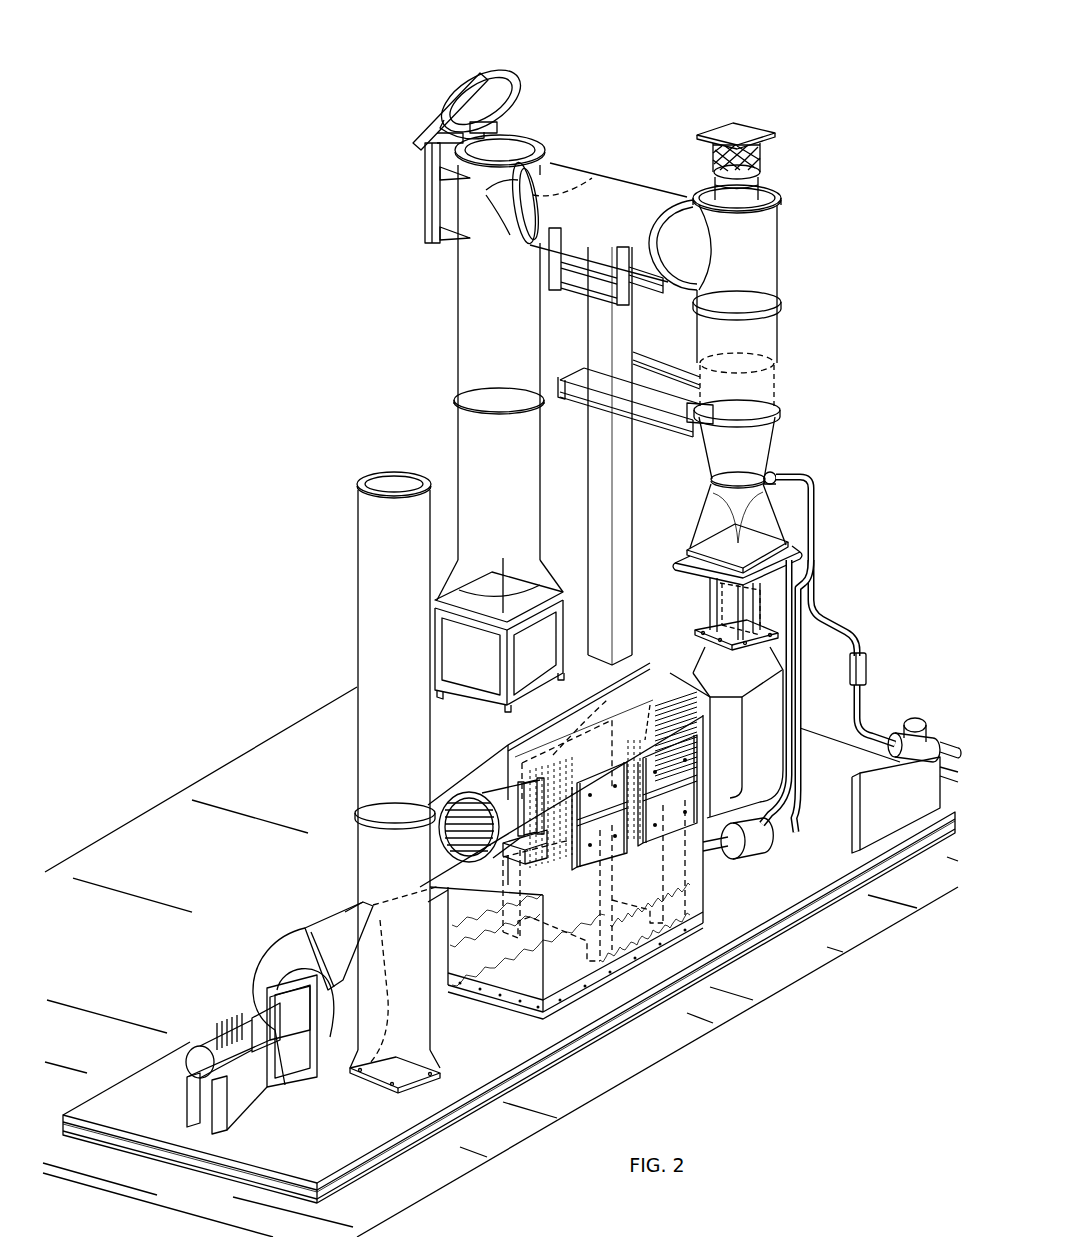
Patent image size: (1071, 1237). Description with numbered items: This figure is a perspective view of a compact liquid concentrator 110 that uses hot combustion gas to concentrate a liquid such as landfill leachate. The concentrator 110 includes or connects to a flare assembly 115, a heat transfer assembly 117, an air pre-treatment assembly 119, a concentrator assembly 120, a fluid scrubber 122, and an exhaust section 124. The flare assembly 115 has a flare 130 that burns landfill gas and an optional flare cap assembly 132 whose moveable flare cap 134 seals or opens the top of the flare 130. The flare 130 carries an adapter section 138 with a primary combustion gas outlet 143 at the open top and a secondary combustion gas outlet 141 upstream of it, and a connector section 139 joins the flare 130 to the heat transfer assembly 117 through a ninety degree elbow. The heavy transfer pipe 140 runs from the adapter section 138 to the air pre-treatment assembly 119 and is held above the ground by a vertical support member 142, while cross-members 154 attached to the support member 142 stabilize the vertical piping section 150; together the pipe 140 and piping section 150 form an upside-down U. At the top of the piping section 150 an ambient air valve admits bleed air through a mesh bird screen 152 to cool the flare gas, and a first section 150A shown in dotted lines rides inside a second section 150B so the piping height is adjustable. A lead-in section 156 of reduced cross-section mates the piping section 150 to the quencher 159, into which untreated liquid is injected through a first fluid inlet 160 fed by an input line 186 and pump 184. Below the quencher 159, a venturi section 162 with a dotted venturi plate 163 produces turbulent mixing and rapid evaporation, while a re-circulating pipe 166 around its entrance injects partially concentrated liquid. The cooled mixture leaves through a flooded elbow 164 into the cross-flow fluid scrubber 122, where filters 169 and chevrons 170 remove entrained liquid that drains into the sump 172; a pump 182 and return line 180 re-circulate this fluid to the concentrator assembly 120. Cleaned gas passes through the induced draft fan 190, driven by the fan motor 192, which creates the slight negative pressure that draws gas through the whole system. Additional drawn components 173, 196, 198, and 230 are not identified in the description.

The compact liquid concentrator 110 is at (676, 67).
The flare assembly 115 is at (402, 351).
The heat transfer assembly 117 is at (662, 162).
The air pre-treatment assembly 119 is at (806, 302).
The concentrator assembly 120 is at (823, 530).
The fluid scrubber 122 is at (702, 874).
The exhaust section 124 is at (356, 818).
The flare 130 is at (458, 420).
The flare cap assembly 132 is at (430, 116).
The flare cap 134 is at (500, 70).
The adapter section 138 is at (485, 351).
The connector section 139 is at (553, 165).
The transfer pipe 140 is at (583, 229).
The secondary combustion gas outlet 141 is at (588, 182).
The support member 142 is at (591, 482).
The primary combustion gas outlet 143 is at (520, 135).
The vertical piping section 150 is at (727, 264).
The first section 150A is at (780, 379).
The second section 150B is at (780, 342).
The mesh bird screen 152 is at (760, 150).
The cross-members 154 is at (663, 357).
The lead-in section 156 is at (723, 457).
The quencher 159 is at (703, 544).
The first fluid inlet 160 is at (780, 480).
The venturi section 162 is at (700, 605).
The venturi plate 163 is at (780, 635).
The flooded elbow 164 is at (749, 749).
The re-circulating pipe 166 is at (770, 572).
The filters 169 is at (652, 705).
The chevrons 170 is at (600, 740).
The sump 172 is at (690, 898).
The return tube 173 is at (770, 812).
The return line 180 is at (796, 812).
The pump 182 is at (765, 840).
The pump 184 is at (915, 720).
The input line 186 is at (862, 700).
The induced draft fan 190 is at (258, 963).
The induced draft fan motor 192 is at (225, 1040).
The housing panel 196 is at (578, 718).
The inlet grille duct 198 is at (463, 795).
The skid base 230 is at (715, 958).